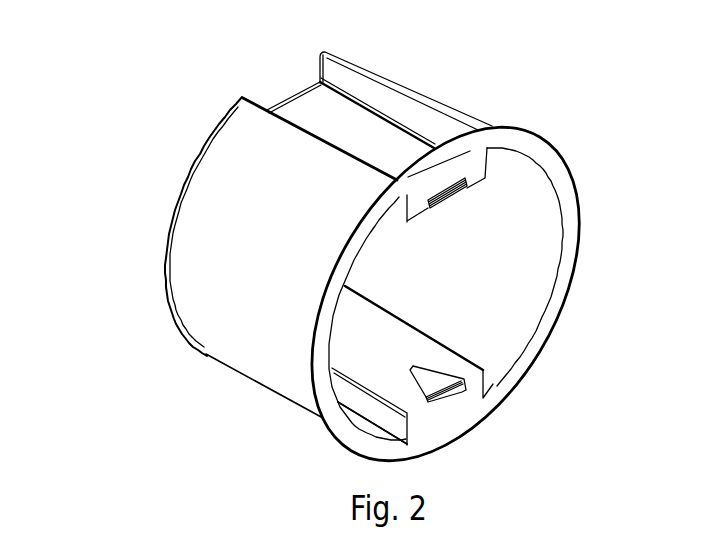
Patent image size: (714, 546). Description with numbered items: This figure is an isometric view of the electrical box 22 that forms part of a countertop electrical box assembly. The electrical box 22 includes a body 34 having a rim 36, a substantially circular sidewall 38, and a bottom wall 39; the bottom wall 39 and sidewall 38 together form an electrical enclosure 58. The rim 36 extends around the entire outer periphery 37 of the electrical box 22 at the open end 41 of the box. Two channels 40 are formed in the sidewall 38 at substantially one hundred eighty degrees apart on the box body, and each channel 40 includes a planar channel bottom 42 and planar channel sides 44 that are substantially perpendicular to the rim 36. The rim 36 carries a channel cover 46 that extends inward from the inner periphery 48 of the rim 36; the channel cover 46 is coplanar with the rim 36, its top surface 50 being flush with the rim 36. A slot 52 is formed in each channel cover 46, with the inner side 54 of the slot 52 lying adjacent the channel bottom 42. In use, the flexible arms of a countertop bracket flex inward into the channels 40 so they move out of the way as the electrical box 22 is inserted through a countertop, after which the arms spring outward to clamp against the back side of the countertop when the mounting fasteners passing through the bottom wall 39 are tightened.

The electrical box 22 is at (100, 118).
The body 34 is at (226, 366).
The rim 36 is at (563, 188).
The outer periphery 37 is at (292, 346).
The sidewall 38 is at (267, 256).
The bottom wall 39 is at (163, 212).
The channel 40 is at (312, 107).
The open end 41 is at (522, 360).
The channel bottom 42 is at (385, 151).
The channel side 44 is at (390, 108).
The channel cover 46 is at (470, 152).
The inner periphery 48 is at (540, 287).
The top surface 50 is at (449, 180).
The slot 52 is at (444, 395).
The inner side 54 is at (433, 208).
The electrical enclosure 58 is at (540, 252).